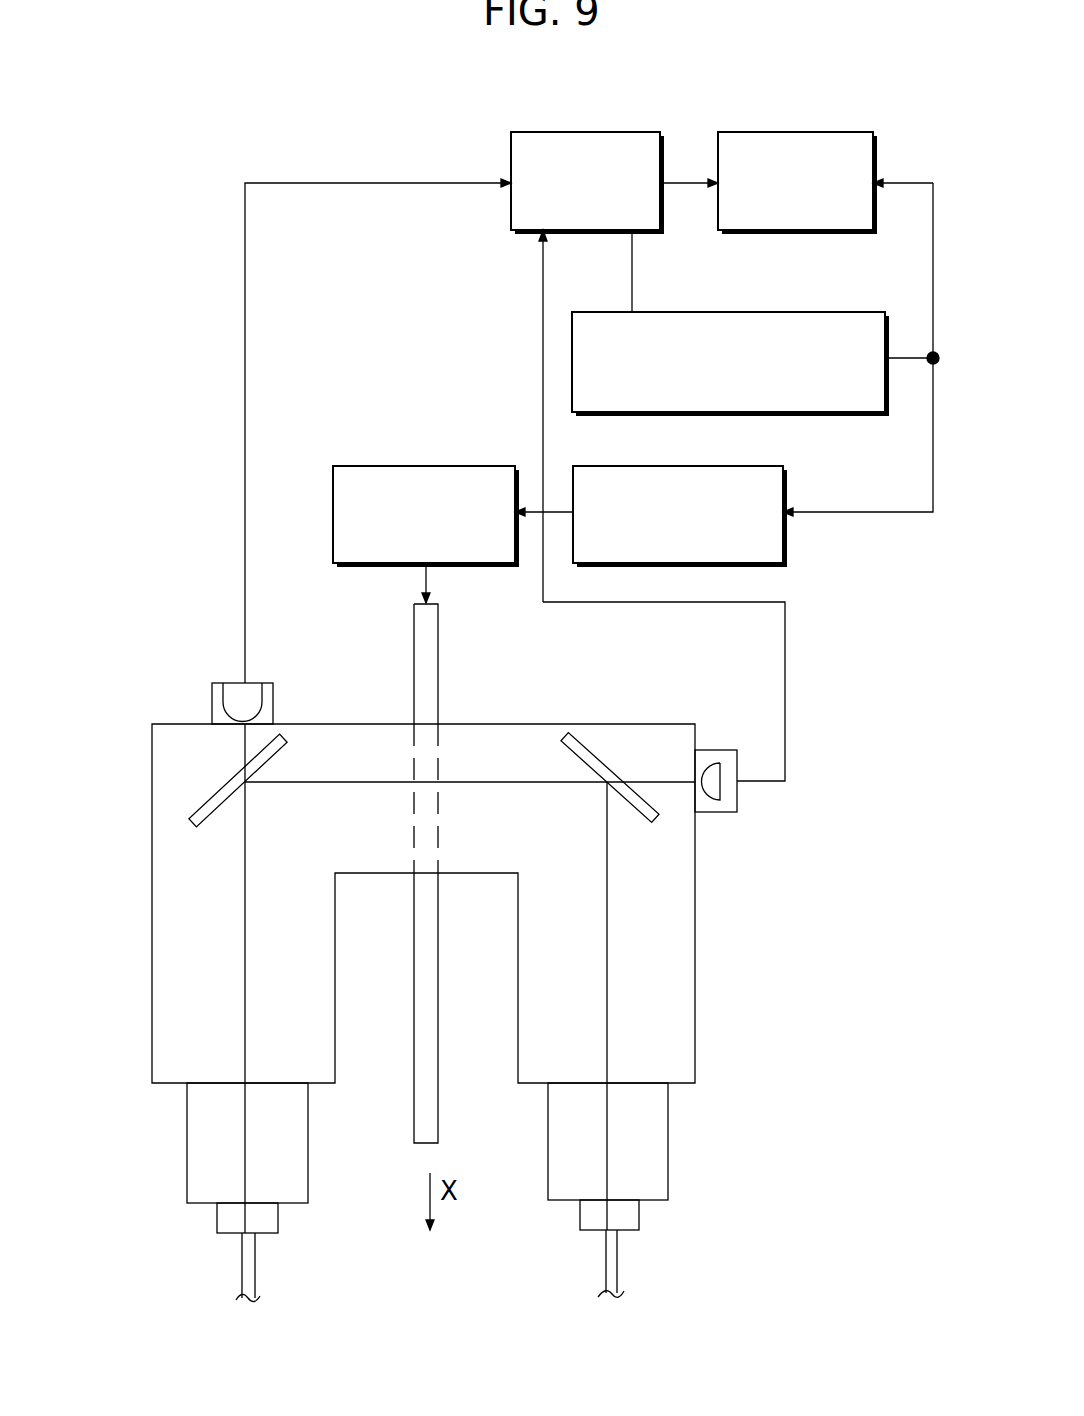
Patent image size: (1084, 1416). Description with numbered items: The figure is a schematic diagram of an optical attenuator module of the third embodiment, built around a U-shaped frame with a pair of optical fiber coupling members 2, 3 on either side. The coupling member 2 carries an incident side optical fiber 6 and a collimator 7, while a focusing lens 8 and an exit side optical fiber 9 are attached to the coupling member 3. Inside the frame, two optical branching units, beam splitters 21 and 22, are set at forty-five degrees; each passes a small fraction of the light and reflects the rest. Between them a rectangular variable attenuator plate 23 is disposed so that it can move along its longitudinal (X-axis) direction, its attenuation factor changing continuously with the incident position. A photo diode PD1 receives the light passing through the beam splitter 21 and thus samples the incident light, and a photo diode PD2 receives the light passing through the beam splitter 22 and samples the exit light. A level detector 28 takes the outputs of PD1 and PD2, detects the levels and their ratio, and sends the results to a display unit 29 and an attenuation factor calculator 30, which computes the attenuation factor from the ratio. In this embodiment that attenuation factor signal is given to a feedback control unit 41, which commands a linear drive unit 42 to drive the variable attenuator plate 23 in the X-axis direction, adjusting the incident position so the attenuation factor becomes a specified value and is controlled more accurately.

The level detector 28 is at (583, 132).
The display unit 29 is at (797, 132).
The attenuation factor calculator 30 is at (712, 312).
The feedback control unit 41 is at (667, 466).
The linear drive unit 42 is at (400, 466).
The variable attenuator plate 23 is at (438, 646).
The photo diode PD1 is at (233, 683).
The photo diode PD2 is at (718, 812).
The beam splitter 21 is at (285, 737).
The beam splitter 22 is at (591, 737).
The optical fiber coupling member 2 is at (218, 1162).
The optical fiber coupling member 3 is at (635, 1162).
The collimator 7 is at (187, 1131).
The focusing lens 8 is at (656, 1130).
The optical fiber 6 is at (243, 1280).
The optical fiber 9 is at (616, 1276).